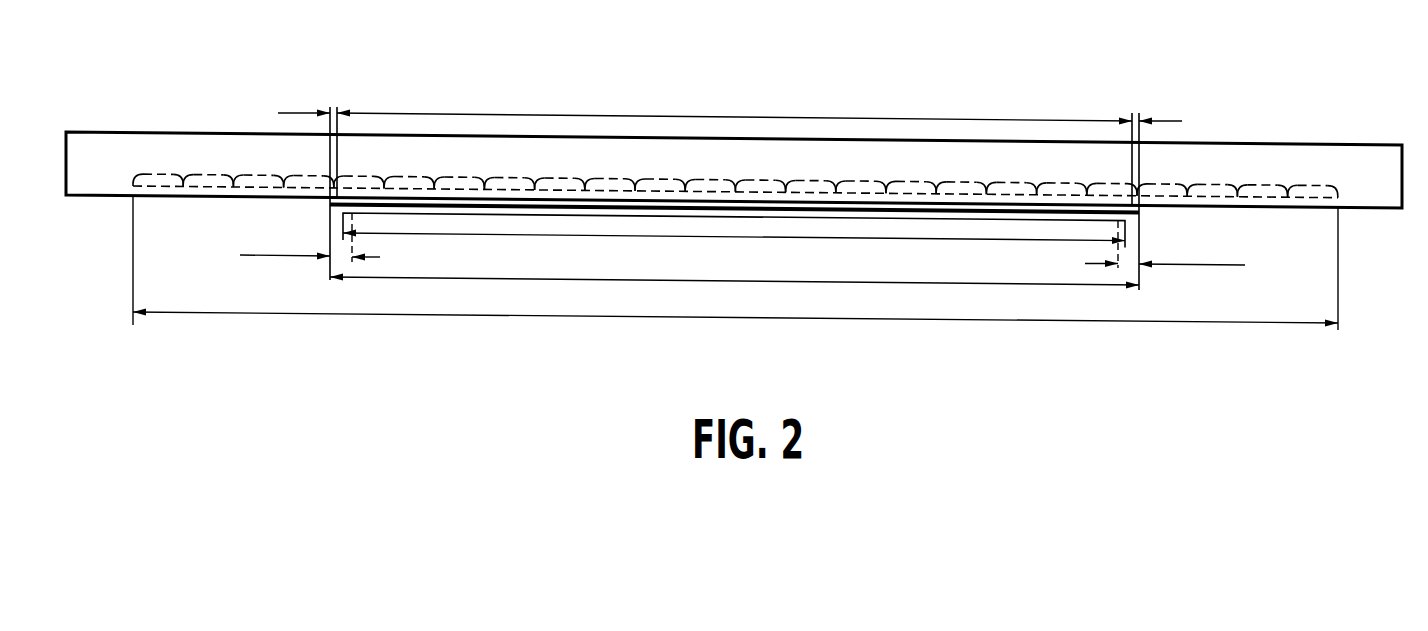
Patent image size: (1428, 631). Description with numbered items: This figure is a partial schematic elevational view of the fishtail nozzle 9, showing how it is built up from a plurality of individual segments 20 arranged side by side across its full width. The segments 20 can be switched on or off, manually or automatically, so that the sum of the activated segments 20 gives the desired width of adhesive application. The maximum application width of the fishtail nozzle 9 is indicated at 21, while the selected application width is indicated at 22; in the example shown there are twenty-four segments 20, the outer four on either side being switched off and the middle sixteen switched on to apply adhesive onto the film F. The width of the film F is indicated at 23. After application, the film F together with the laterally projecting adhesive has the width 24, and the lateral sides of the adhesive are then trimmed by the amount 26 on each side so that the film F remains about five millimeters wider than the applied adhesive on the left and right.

The fishtail nozzle 9 is at (120, 126).
The individual segments 20 is at (160, 173).
The maximum application width 21 is at (1078, 320).
The selected application width 22 is at (418, 113).
The width of the film 23 is at (535, 236).
The width of film and laterally projecting adhesive 24 is at (827, 284).
The trimmed amount 26 is at (262, 256).
The film F is at (467, 214).